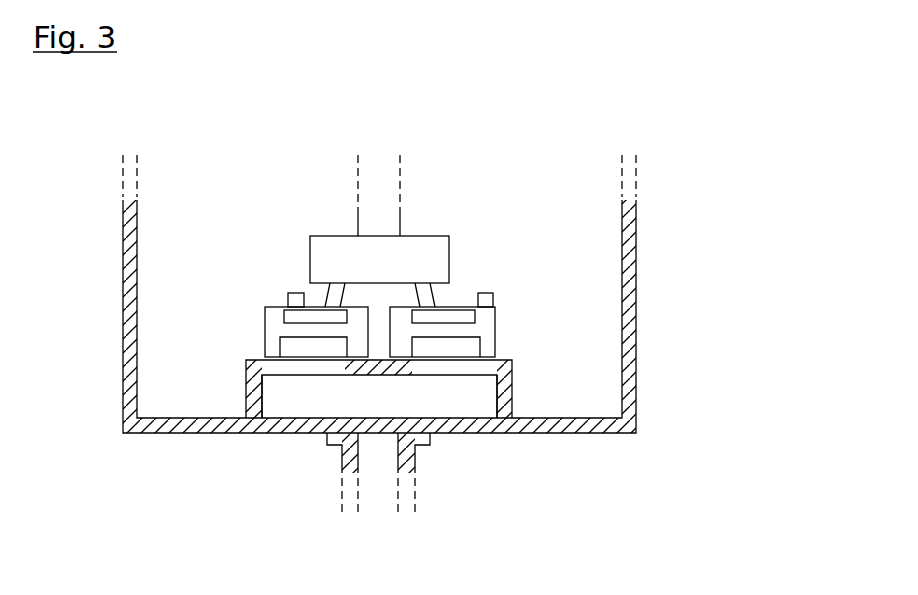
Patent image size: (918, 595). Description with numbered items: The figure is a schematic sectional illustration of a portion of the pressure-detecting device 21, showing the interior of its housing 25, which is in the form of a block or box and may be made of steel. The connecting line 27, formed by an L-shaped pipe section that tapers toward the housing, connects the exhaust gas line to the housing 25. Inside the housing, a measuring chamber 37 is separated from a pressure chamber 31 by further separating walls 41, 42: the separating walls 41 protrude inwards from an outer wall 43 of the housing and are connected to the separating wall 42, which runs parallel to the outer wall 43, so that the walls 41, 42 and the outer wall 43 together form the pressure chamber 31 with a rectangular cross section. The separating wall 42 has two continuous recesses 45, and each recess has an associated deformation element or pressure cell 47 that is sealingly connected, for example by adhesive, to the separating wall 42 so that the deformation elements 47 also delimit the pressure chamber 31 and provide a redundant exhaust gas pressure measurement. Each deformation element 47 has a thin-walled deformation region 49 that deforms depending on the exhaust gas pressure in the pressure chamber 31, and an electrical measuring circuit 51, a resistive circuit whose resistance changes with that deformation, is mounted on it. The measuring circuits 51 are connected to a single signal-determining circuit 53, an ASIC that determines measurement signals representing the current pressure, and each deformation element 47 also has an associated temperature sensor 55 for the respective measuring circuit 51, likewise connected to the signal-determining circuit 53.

The pressure-detecting device 21 is at (718, 216).
The housing 25 is at (630, 390).
The connecting line 27 is at (343, 482).
The pressure chamber 31 is at (438, 400).
The measuring chamber 37 is at (590, 349).
The separating walls 41 is at (262, 390).
The separating wall 42 is at (370, 372).
The outer wall 43 is at (440, 425).
The recesses 45 is at (290, 386).
The deformation element 47 is at (275, 323).
The deformation region 49 is at (302, 284).
The electrical measuring circuit 51 is at (293, 313).
The signal-determining circuit 53 is at (431, 242).
The temperature sensor 55 is at (287, 299).